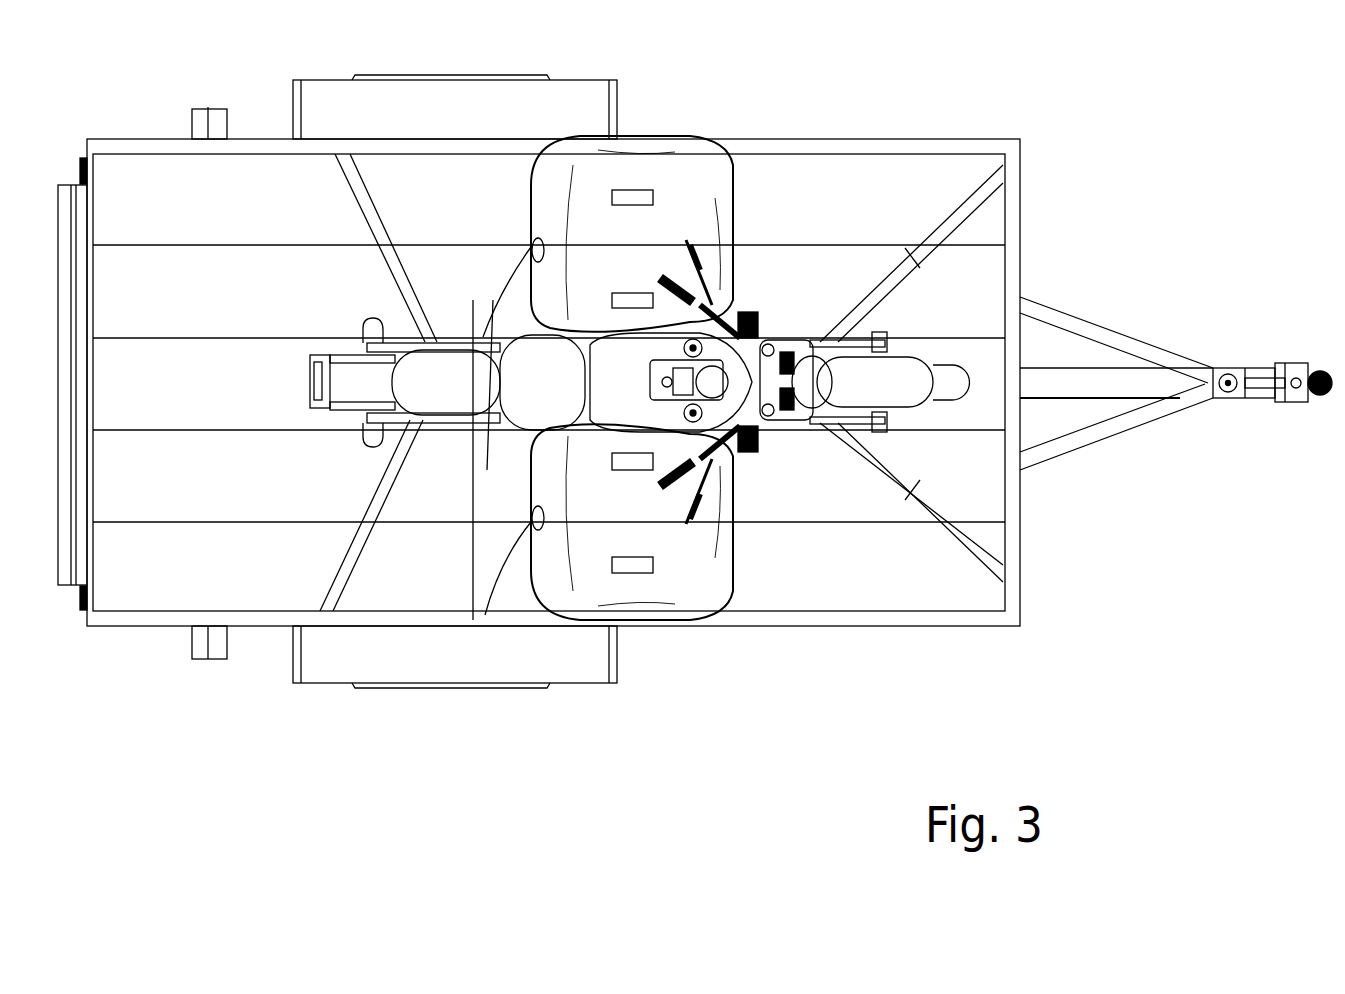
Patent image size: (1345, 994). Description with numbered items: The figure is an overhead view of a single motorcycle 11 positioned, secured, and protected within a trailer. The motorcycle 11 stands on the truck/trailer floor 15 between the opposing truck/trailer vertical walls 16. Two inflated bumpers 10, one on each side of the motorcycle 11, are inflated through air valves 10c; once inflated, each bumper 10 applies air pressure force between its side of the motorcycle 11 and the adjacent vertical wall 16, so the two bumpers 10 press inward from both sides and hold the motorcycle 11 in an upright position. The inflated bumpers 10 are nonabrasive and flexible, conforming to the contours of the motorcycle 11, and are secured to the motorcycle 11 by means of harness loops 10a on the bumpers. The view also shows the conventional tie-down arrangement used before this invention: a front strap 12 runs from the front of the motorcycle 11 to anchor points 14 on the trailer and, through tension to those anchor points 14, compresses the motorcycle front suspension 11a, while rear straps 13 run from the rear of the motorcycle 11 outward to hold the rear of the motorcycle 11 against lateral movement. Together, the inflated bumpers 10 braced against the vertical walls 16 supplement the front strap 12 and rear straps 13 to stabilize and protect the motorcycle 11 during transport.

The inflated bumper 10 is at (614, 458).
The harness loop 10a is at (640, 573).
The air valve 10c is at (485, 615).
The motorcycle 11 is at (640, 509).
The front suspension 11a is at (820, 428).
The front strap 12 is at (912, 262).
The rear strap 13 is at (358, 532).
The anchor point 14 is at (1003, 175).
The truck/trailer floor 15 is at (163, 562).
The truck/trailer vertical wall 16 is at (848, 148).